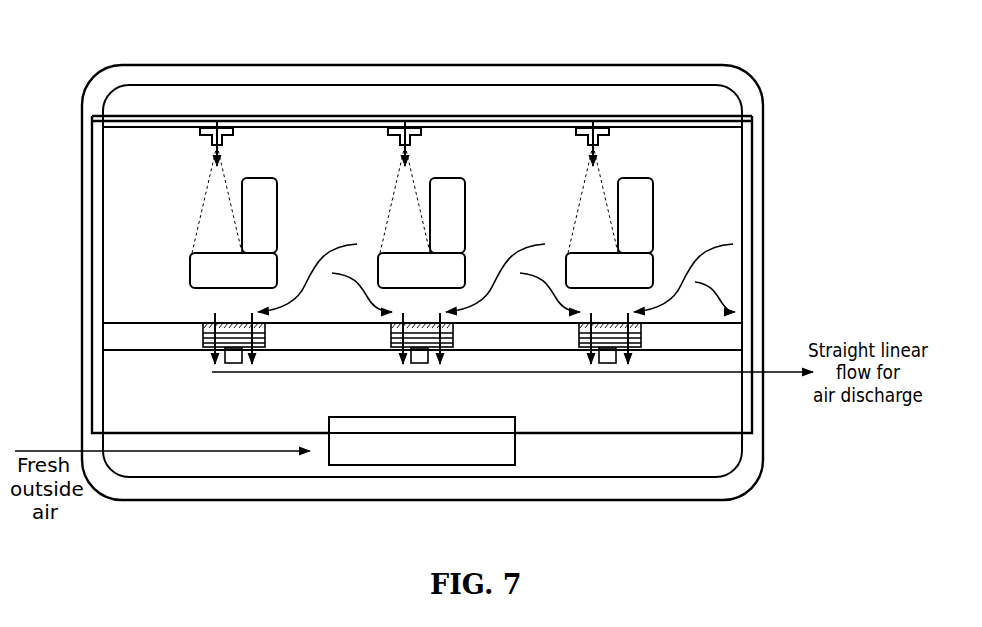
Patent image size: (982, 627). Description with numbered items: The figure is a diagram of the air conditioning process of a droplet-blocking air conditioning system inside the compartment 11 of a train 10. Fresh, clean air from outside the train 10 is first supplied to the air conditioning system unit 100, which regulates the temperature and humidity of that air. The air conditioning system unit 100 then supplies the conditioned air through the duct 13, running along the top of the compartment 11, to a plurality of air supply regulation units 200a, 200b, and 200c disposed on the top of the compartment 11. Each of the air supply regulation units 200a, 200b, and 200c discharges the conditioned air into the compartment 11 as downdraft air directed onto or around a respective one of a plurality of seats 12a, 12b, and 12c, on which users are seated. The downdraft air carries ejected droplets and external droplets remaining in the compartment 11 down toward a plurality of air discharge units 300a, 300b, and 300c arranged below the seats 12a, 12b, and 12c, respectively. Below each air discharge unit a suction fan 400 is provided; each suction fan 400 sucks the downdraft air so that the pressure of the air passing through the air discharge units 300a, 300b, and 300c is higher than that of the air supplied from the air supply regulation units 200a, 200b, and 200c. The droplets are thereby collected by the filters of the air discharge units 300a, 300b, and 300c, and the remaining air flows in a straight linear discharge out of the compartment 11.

The train 10 is at (686, 64).
The compartment 11 is at (146, 229).
The duct 13 is at (147, 117).
The seat 12a is at (262, 180).
The seat 12b is at (450, 180).
The seat 12c is at (638, 180).
The air supply regulation unit 200a is at (207, 128).
The air supply regulation unit 200b is at (395, 128).
The air supply regulation unit 200c is at (583, 128).
The air discharge unit 300a is at (206, 353).
The air discharge unit 300b is at (394, 353).
The air discharge unit 300c is at (584, 353).
The suction fan 400 is at (233, 363).
The air conditioning system unit 100 is at (369, 467).